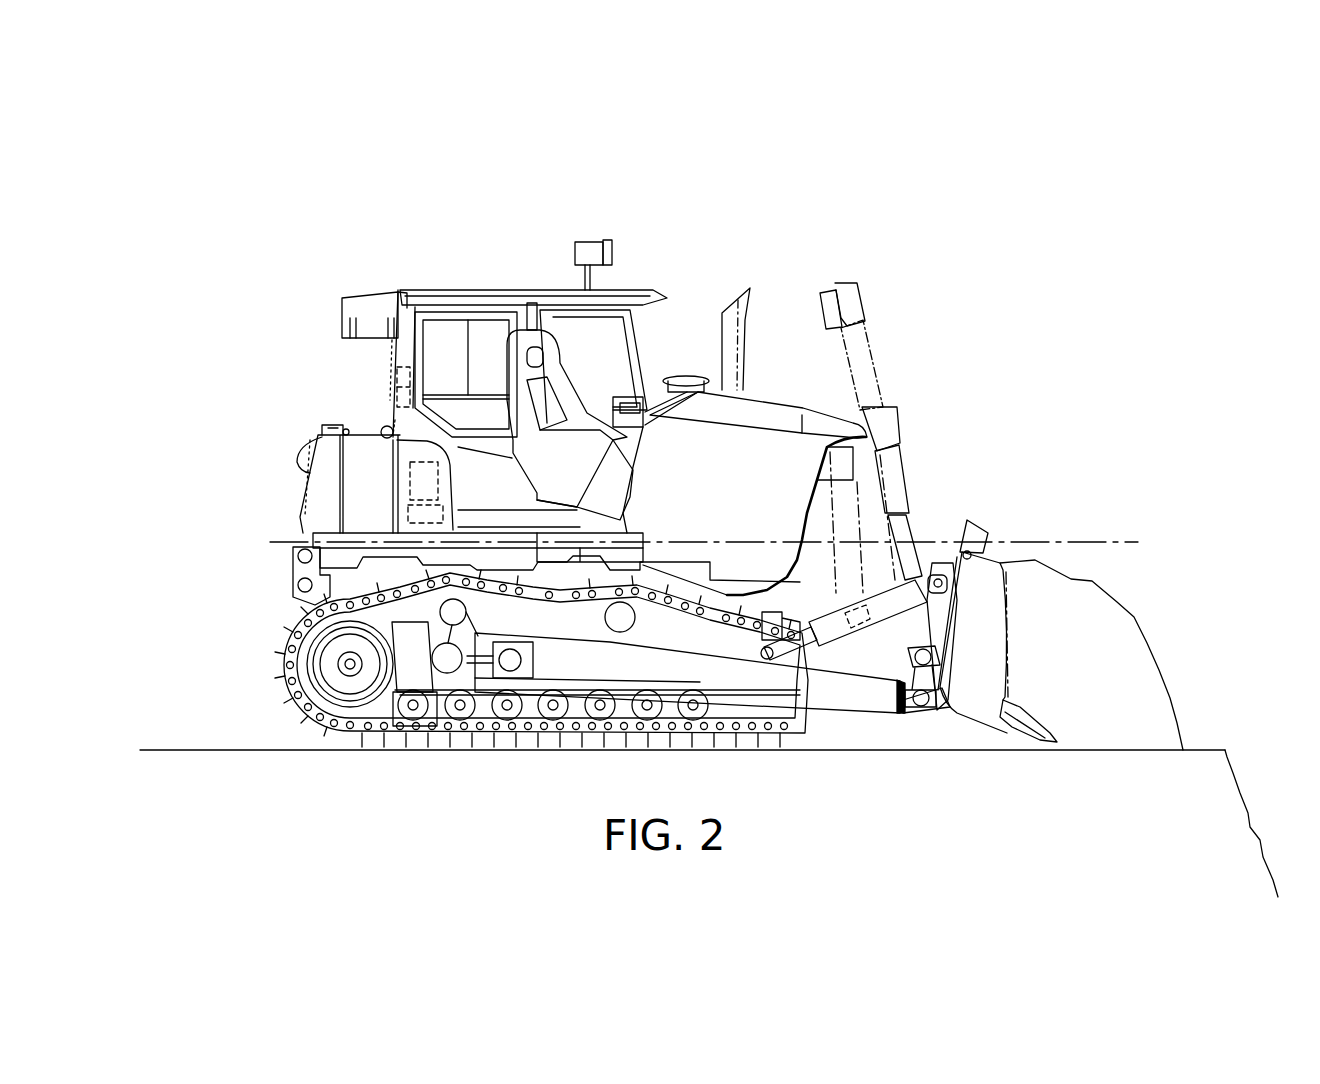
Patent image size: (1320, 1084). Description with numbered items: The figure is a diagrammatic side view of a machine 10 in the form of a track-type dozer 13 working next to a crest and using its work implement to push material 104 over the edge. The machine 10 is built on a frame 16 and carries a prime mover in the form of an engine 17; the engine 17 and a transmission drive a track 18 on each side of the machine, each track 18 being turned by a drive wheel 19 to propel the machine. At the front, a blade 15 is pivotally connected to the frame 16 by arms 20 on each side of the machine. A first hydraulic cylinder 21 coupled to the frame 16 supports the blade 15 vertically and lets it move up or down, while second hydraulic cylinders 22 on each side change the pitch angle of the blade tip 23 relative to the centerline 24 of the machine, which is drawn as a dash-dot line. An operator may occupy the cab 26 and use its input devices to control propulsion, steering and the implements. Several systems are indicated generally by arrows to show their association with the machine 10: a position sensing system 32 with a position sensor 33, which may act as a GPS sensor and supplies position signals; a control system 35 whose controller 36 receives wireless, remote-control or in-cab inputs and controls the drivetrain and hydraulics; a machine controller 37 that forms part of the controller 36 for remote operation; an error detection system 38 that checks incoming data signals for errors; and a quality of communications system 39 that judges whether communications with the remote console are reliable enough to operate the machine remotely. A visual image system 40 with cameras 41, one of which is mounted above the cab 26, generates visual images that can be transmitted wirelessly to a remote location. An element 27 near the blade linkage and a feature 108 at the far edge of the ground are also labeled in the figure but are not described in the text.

The machine 10 is at (893, 238).
The dozer 13 is at (773, 292).
The blade 15 is at (984, 572).
The frame 16 is at (297, 570).
The engine 17 is at (755, 443).
The track 18 is at (300, 625).
The drive wheel 19 is at (327, 658).
The arms 20 is at (787, 688).
The first hydraulic cylinder 21 is at (855, 345).
The second hydraulic cylinders 22 is at (884, 604).
The blade tip 23 is at (1017, 734).
The centerline 24 is at (1113, 546).
The cab 26 is at (615, 328).
The lift cylinder 27 is at (832, 607).
The position sensing system 32 is at (297, 318).
The position sensor 33 is at (387, 390).
The control system 35 is at (263, 350).
The controller 36 is at (378, 426).
The machine controller 37 is at (400, 519).
The error detection system 38 is at (237, 390).
The quality of communications system 39 is at (232, 440).
The visual image system 40 is at (610, 190).
The cameras 41 is at (588, 240).
The material 104 is at (1099, 673).
The cut edge 108 is at (1228, 728).